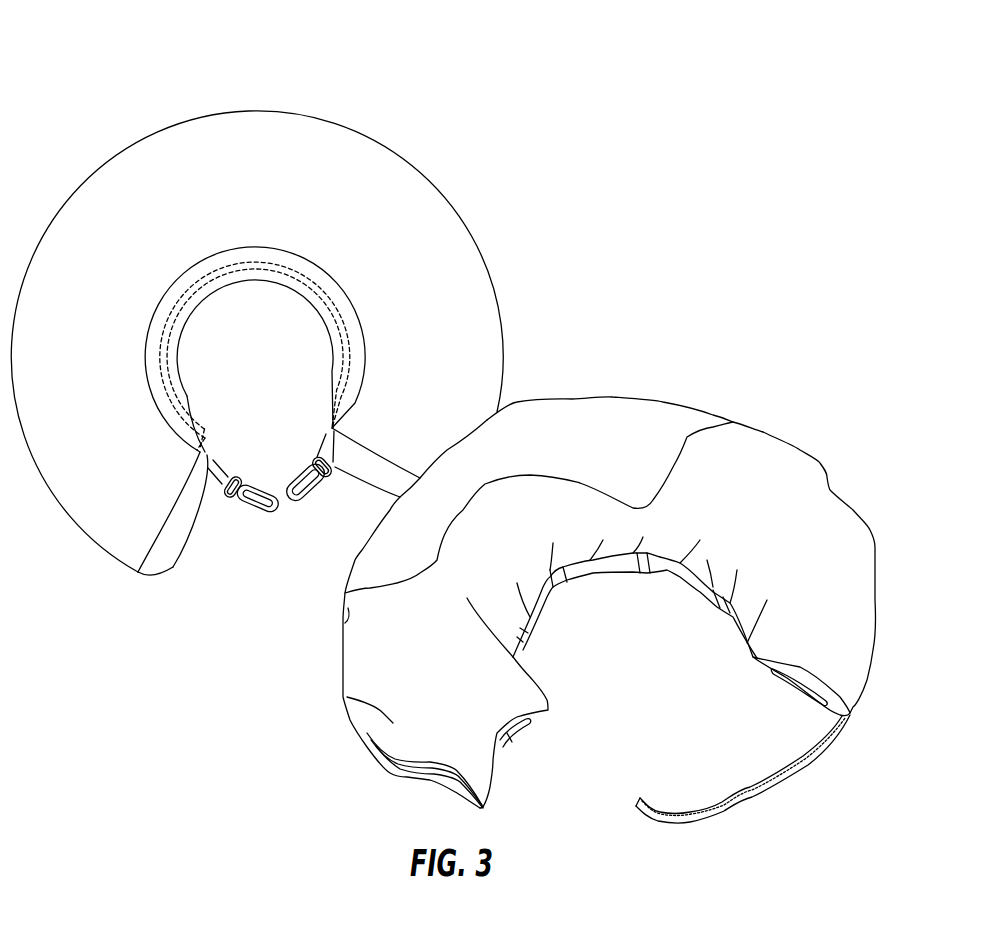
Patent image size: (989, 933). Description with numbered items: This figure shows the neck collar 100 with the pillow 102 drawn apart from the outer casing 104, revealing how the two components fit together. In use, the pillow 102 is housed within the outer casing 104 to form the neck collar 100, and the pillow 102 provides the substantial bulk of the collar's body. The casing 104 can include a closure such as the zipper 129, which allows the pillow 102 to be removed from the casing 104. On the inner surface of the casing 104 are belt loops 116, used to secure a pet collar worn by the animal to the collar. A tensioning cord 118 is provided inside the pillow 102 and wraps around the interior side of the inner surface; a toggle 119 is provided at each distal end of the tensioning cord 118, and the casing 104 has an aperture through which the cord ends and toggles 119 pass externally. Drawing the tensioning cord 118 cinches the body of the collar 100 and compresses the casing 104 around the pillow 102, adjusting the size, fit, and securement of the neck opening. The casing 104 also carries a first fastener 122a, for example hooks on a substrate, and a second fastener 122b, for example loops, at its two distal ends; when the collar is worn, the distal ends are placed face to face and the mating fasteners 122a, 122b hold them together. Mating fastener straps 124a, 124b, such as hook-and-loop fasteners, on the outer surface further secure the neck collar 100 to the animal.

The neck collar 100 is at (124, 32).
The pillow 102 is at (457, 230).
The outer casing 104 is at (581, 599).
The belt loops 116 is at (643, 573).
The tensioning cord 118 is at (262, 470).
The toggle 119 is at (237, 463).
The first fastener 122a is at (510, 742).
The second fastener 122b is at (800, 687).
The fastener strap 124a is at (397, 766).
The fastener strap 124b is at (747, 793).
The zipper 129 is at (572, 399).